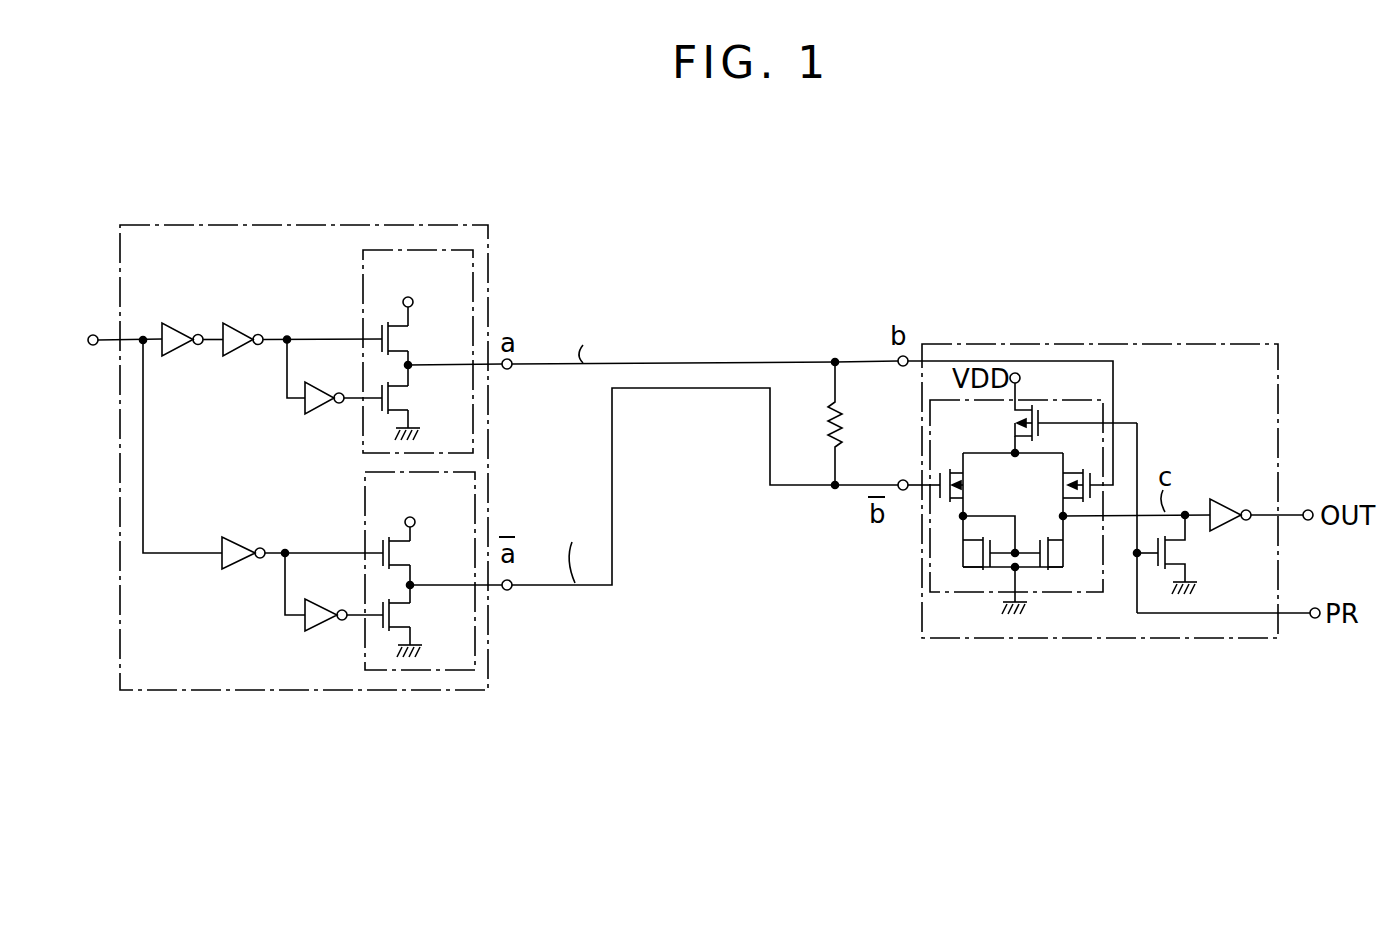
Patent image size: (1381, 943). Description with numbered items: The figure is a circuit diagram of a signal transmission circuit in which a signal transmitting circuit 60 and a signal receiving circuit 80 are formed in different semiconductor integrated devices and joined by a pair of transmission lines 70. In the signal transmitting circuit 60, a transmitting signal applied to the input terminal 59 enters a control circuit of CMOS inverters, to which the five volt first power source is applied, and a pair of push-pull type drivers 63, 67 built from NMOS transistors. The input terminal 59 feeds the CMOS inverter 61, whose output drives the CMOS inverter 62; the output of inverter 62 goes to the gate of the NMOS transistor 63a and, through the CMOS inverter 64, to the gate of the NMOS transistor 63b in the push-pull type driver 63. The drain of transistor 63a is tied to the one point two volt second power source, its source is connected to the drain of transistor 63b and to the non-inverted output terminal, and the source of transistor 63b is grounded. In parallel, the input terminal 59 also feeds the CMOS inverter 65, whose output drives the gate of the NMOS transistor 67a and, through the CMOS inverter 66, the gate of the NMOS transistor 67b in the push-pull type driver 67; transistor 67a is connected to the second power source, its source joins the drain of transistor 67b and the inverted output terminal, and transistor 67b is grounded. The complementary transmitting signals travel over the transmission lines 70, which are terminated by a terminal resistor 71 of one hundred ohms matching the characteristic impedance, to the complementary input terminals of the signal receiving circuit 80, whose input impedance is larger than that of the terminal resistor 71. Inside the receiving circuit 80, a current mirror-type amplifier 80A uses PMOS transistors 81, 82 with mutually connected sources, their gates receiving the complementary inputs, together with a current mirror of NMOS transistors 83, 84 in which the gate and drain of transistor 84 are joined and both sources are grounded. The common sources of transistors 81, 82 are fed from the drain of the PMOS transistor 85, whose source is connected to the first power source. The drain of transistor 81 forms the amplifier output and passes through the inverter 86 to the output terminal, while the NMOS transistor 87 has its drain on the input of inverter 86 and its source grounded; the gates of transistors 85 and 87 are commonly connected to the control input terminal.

The input terminal 59 is at (95, 335).
The signal transmitting circuit 60 is at (283, 224).
The CMOS inverter 61 is at (184, 323).
The CMOS inverter 62 is at (252, 323).
The push-pull type driver 63 is at (422, 318).
The NMOS transistor 63a is at (393, 342).
The NMOS transistor 63b is at (393, 400).
The CMOS inverter 64 is at (296, 412).
The CMOS inverter 65 is at (247, 540).
The CMOS inverter 66 is at (299, 626).
The push-pull type driver 67 is at (420, 602).
The NMOS transistor 67a is at (394, 556).
The NMOS transistor 67b is at (394, 617).
The transmission lines 70 is at (668, 408).
The terminal resistor 71 is at (825, 425).
The signal receiving circuit 80 is at (1068, 343).
The current mirror-type amplifier 80A is at (981, 496).
The PMOS transistor 81 is at (1062, 492).
The PMOS transistor 82 is at (967, 479).
The NMOS transistor 83 is at (1052, 556).
The NMOS transistor 84 is at (982, 553).
The PMOS transistor 85 is at (1040, 425).
The inverter 86 is at (1232, 500).
The NMOS transistor 87 is at (1180, 556).